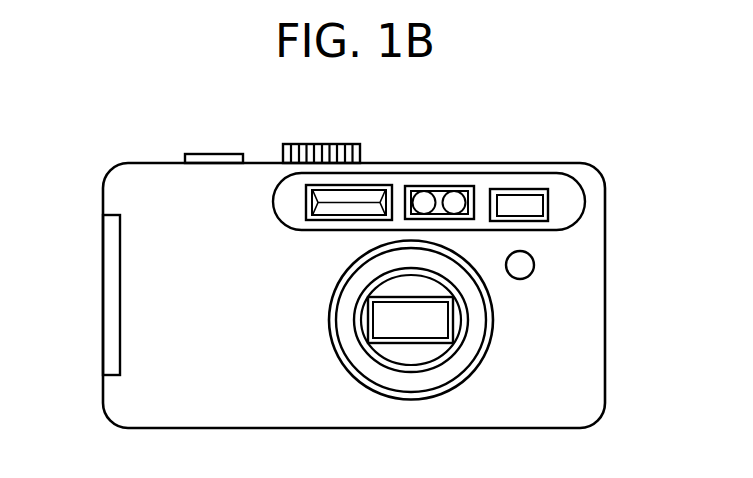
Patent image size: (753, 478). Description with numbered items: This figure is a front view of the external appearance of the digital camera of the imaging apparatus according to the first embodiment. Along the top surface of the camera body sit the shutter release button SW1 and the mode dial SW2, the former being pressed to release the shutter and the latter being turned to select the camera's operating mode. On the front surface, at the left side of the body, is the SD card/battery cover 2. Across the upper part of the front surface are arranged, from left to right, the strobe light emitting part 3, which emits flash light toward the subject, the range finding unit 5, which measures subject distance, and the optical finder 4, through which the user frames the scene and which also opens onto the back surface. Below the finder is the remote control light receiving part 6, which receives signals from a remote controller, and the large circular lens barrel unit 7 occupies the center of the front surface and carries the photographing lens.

The SD card/battery cover 2 is at (112, 265).
The shutter release button SW1 is at (216, 157).
The mode dial SW2 is at (322, 150).
The strobe light emitting part 3 is at (377, 193).
The range finding unit 5 is at (460, 195).
The optical finder 4 is at (537, 202).
The remote control light receiving part 6 is at (525, 270).
The lens barrel unit 7 is at (430, 357).